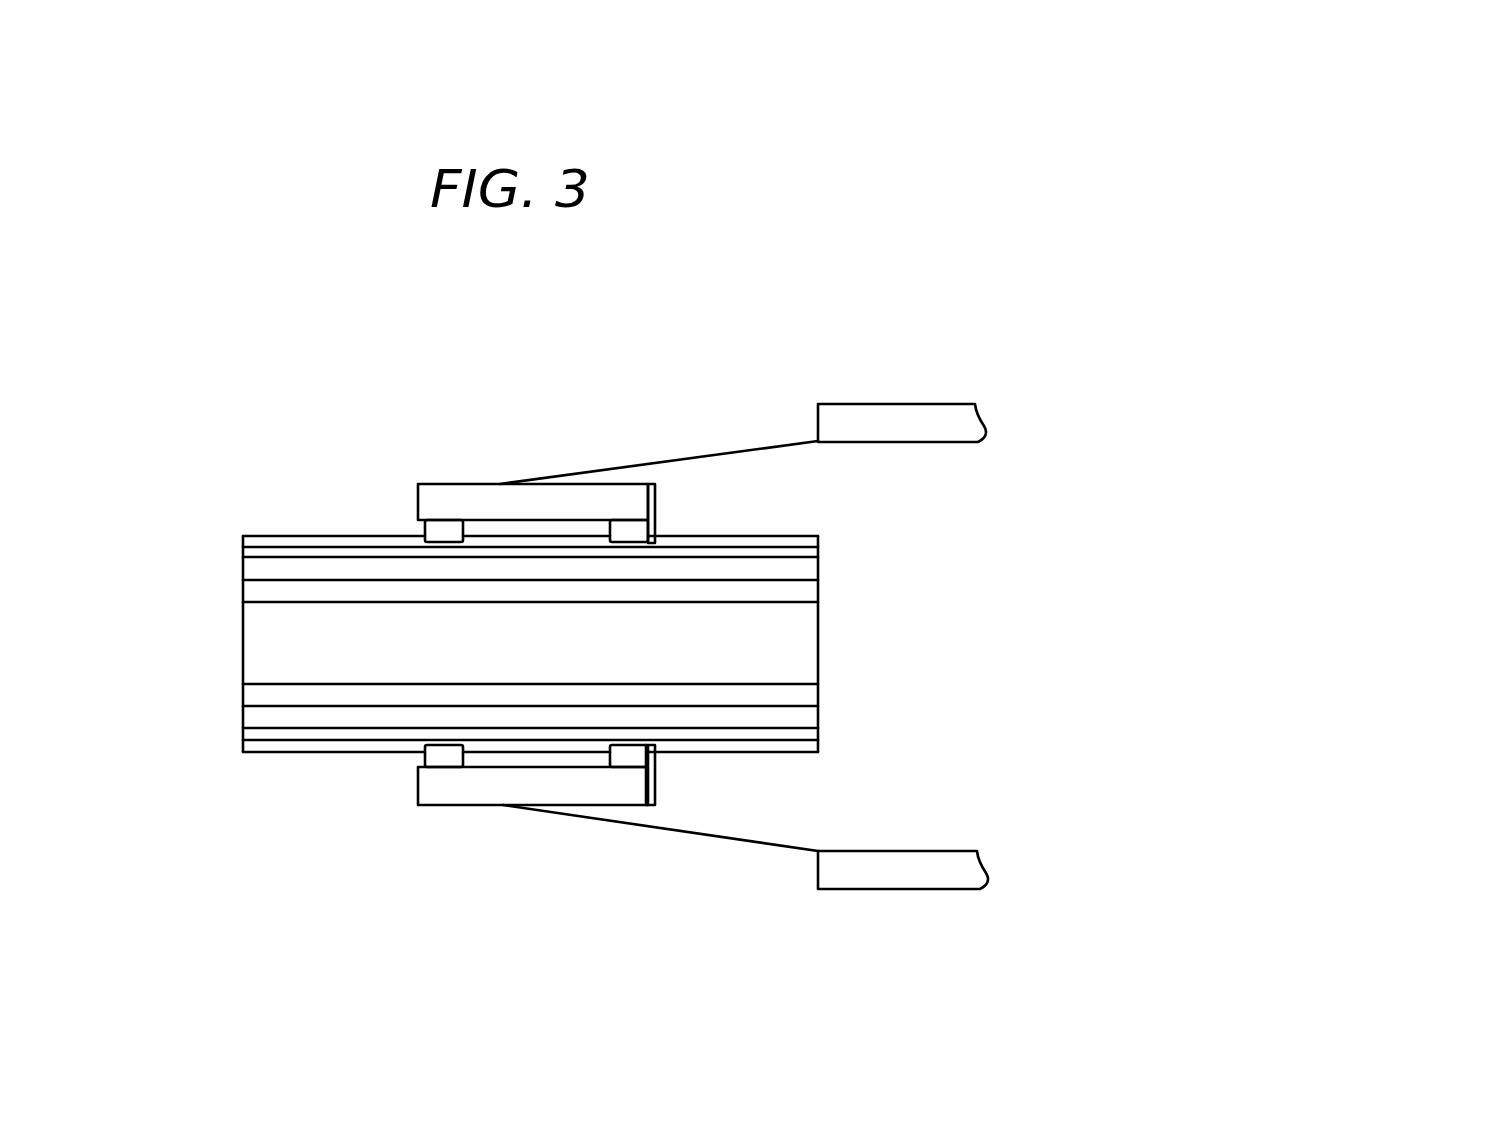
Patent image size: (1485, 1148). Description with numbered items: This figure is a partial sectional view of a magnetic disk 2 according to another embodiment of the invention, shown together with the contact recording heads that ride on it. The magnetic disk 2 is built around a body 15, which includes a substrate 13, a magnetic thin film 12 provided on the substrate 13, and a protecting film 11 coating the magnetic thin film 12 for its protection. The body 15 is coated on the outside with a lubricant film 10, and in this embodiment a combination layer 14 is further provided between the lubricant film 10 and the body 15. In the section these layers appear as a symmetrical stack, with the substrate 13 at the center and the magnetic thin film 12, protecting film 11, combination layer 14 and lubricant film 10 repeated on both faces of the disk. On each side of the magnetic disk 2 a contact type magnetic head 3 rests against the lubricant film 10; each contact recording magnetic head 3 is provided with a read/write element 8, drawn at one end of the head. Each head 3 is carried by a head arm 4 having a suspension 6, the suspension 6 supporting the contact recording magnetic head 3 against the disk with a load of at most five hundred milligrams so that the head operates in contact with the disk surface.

The magnetic disk 2 is at (848, 668).
The contact recording magnetic head 3 is at (631, 524).
The head arm 4 is at (930, 404).
The suspension 6 is at (594, 470).
The read/write element 8 is at (657, 517).
The lubricant film 10 is at (820, 537).
The protecting film 11 is at (820, 570).
The magnetic thin film 12 is at (820, 592).
The substrate 13 is at (810, 655).
The combination layer 14 is at (820, 547).
The body 15 is at (849, 642).